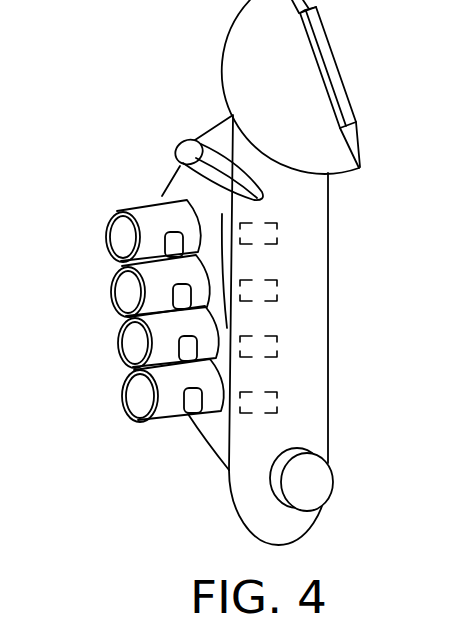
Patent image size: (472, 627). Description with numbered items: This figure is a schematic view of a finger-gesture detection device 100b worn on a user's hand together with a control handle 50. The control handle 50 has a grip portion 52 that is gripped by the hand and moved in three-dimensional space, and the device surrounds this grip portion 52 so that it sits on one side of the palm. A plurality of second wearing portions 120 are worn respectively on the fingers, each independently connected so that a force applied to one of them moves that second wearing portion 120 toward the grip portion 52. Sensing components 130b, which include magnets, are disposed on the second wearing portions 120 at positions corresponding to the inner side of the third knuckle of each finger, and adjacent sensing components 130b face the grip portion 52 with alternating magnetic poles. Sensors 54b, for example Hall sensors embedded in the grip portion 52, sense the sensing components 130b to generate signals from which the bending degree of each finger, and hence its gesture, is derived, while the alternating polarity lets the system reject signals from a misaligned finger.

The control handle 50 is at (247, 57).
The grip portion 52 is at (315, 228).
The sensors 54b is at (270, 293).
The finger-gesture detection device 100b is at (144, 324).
The second wearing portions 120 is at (137, 218).
The sensing components 130b is at (178, 238).